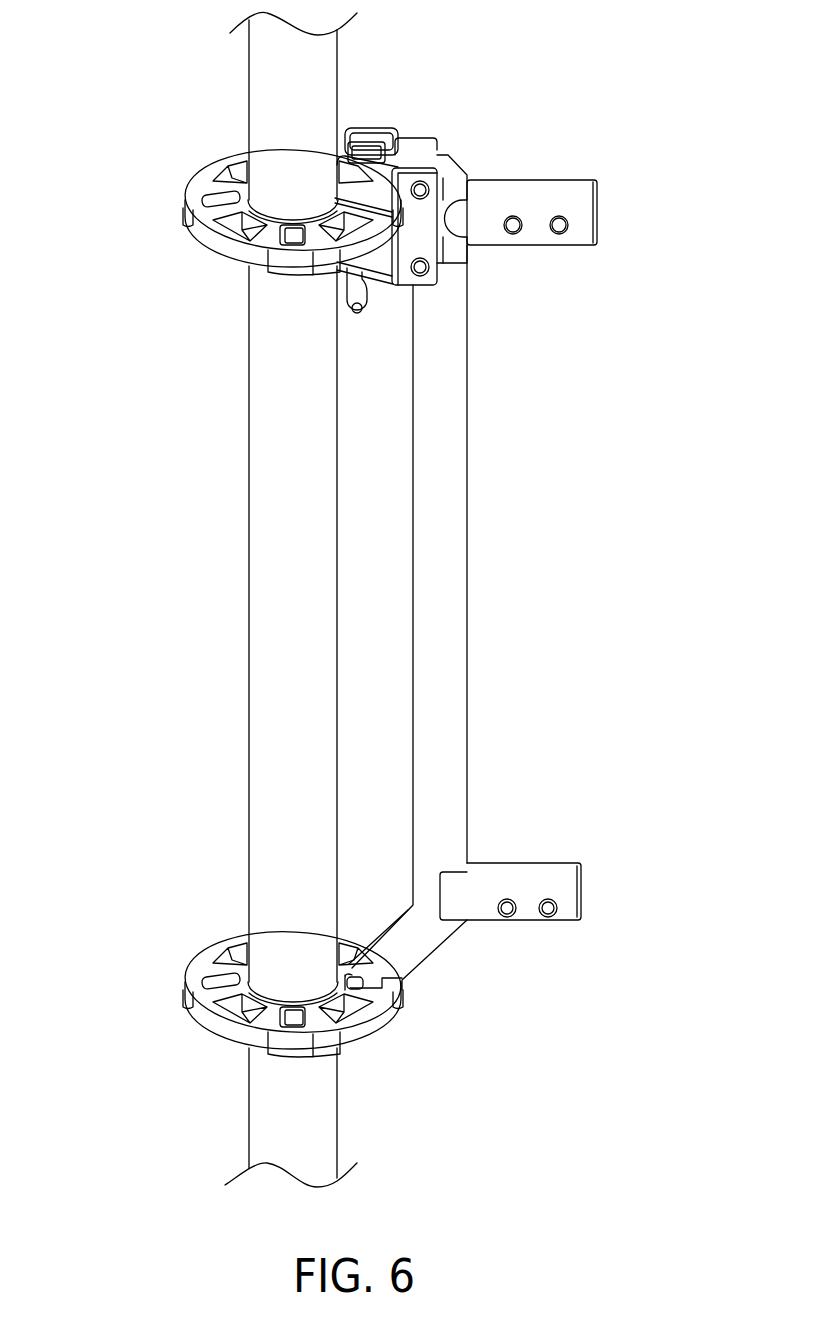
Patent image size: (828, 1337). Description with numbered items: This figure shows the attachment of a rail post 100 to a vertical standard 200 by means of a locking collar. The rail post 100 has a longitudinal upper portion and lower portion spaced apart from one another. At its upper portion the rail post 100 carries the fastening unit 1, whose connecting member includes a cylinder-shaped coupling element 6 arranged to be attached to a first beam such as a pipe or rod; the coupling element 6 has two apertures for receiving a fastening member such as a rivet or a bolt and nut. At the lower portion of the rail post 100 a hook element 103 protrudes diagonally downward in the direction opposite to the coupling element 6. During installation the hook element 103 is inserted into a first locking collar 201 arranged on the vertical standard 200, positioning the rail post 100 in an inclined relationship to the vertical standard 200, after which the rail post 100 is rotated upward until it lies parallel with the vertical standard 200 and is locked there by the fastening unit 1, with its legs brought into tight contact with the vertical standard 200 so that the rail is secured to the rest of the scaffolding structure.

The fastening unit 1 is at (435, 122).
The coupling element 6 is at (573, 207).
The rail post 100 is at (440, 565).
The hook element 103 is at (407, 953).
The vertical standard 200 is at (290, 655).
The first locking collar 201 is at (185, 200).